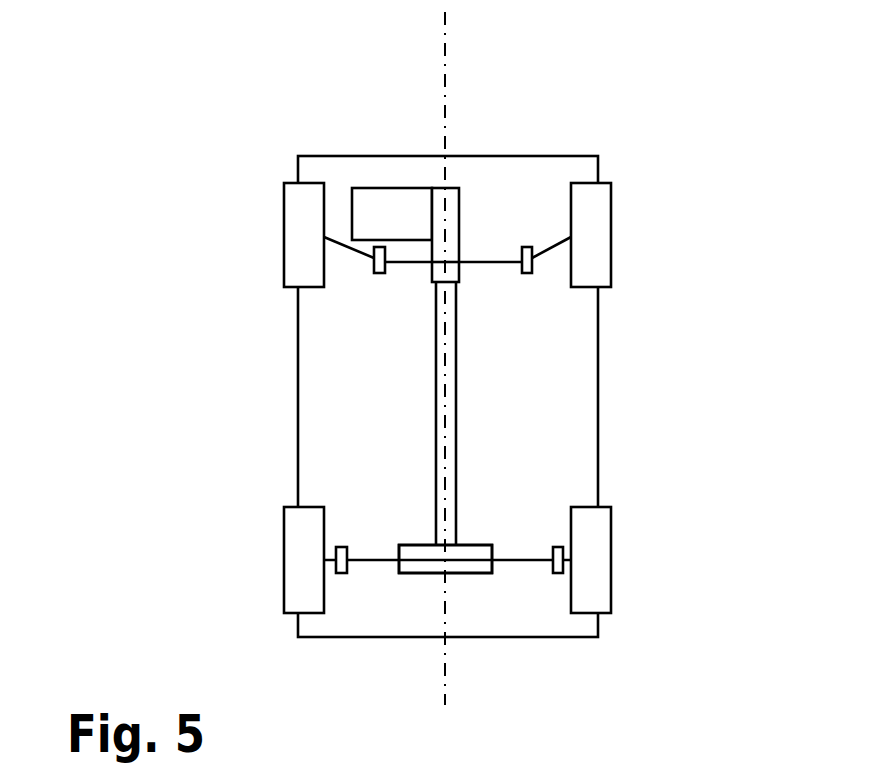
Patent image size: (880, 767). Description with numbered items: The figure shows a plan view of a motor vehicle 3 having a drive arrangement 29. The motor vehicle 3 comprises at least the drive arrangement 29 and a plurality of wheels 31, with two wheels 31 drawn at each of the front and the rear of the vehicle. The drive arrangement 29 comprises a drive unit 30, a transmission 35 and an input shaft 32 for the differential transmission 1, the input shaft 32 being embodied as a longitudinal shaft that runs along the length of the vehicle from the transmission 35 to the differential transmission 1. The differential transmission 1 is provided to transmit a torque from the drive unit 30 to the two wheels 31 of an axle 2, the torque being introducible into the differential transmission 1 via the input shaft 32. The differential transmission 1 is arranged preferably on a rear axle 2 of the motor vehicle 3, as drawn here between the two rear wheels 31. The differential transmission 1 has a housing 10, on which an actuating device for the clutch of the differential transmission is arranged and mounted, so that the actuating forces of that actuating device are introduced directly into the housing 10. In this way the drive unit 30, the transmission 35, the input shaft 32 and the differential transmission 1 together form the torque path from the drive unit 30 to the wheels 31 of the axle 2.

The differential transmission 1 is at (455, 560).
The axle 2 is at (420, 262).
The motor vehicle 3 is at (465, 368).
The housing 10 is at (407, 575).
The drive arrangement 29 is at (490, 132).
The drive unit 30 is at (414, 213).
The wheels 31 is at (305, 203).
The input shaft 32 is at (455, 432).
The transmission 35 is at (440, 230).